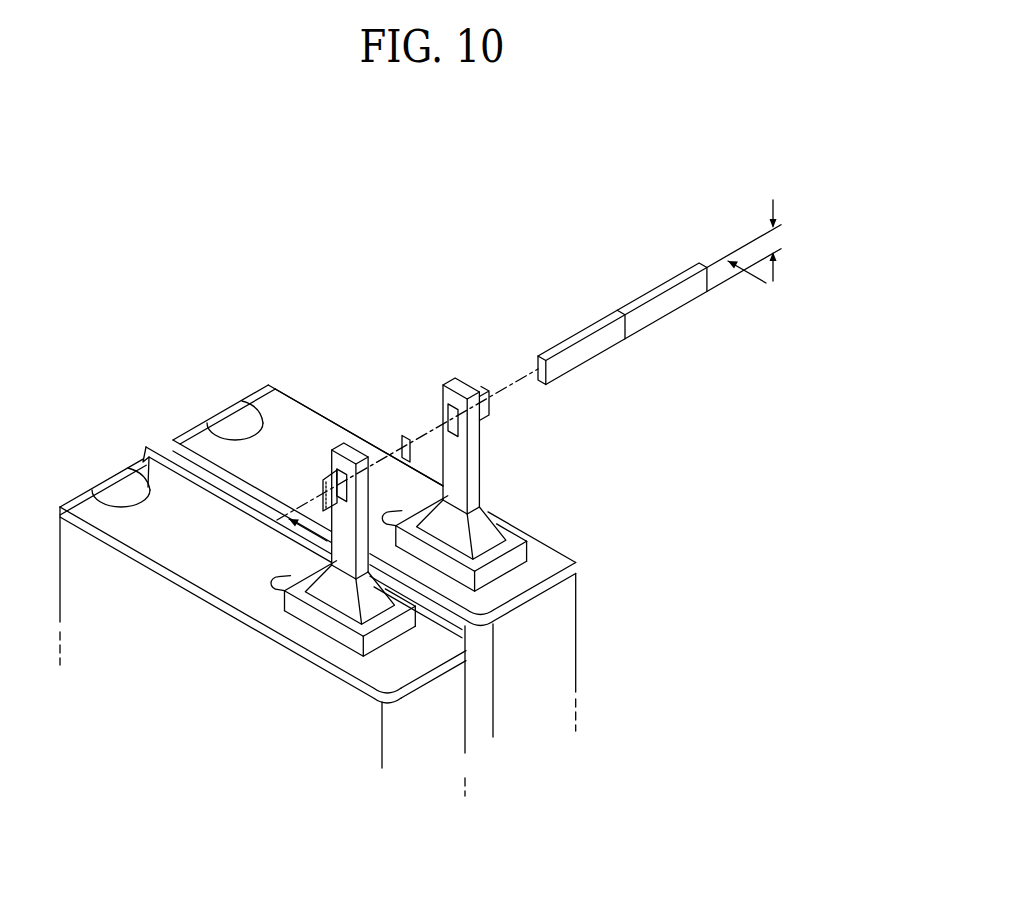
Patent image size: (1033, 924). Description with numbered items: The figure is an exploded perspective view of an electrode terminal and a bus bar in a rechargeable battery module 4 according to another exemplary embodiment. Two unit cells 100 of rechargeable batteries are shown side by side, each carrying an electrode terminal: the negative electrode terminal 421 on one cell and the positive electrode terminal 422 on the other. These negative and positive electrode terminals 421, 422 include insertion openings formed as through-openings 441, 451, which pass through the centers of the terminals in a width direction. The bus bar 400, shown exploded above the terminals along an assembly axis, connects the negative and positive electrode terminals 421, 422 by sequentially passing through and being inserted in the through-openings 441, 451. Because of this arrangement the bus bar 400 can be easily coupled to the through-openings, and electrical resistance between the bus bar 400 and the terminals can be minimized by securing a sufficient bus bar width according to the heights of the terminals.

The rechargeable battery module 4 is at (369, 234).
The unit cell 100 is at (434, 735).
The bus bar 400 is at (622, 296).
The negative electrode terminal 421 is at (455, 385).
The positive electrode terminal 422 is at (341, 456).
The through-opening 441 is at (452, 412).
The through-opening 451 is at (331, 478).